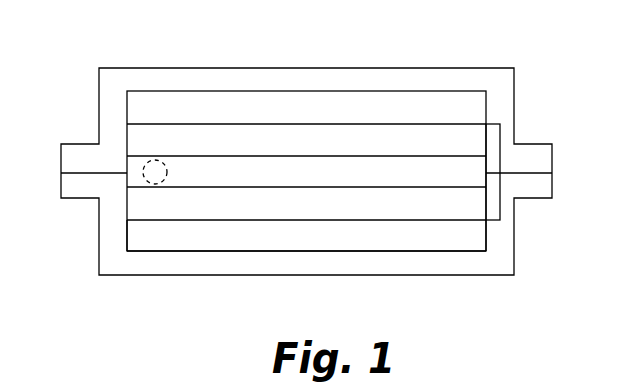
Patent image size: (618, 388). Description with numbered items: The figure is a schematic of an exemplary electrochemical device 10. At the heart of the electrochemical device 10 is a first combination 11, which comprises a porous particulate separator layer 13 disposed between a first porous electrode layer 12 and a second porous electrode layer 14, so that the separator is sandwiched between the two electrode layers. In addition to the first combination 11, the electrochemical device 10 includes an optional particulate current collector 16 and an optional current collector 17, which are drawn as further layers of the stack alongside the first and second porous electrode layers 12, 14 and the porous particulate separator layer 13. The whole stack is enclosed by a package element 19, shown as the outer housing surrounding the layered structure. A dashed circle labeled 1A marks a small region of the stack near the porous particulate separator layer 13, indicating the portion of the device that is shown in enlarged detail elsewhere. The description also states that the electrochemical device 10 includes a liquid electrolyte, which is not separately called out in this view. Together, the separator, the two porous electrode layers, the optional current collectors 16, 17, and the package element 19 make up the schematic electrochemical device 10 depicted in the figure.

The electrochemical device 10 is at (293, 168).
The first combination 11 is at (500, 143).
The first porous electrode layer 12 is at (344, 207).
The porous particulate separator layer 13 is at (279, 175).
The second porous electrode layer 14 is at (382, 138).
The particulate current collector 16 is at (425, 240).
The current collector 17 is at (324, 105).
The package element 19 is at (249, 78).
The detail region shown in FIG. 1A is at (152, 160).